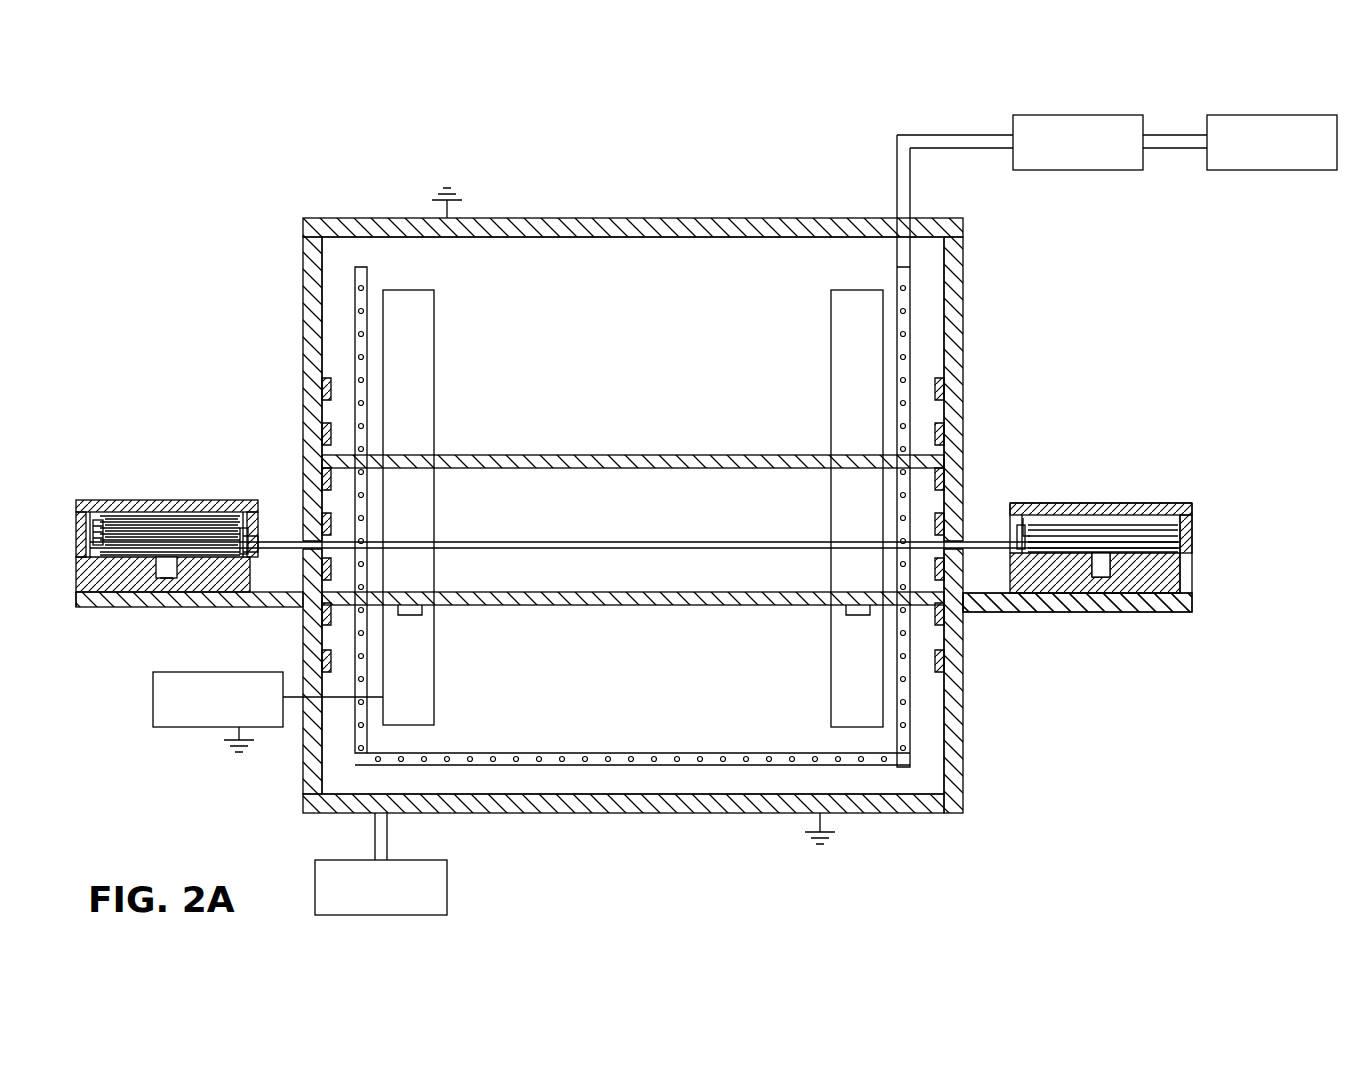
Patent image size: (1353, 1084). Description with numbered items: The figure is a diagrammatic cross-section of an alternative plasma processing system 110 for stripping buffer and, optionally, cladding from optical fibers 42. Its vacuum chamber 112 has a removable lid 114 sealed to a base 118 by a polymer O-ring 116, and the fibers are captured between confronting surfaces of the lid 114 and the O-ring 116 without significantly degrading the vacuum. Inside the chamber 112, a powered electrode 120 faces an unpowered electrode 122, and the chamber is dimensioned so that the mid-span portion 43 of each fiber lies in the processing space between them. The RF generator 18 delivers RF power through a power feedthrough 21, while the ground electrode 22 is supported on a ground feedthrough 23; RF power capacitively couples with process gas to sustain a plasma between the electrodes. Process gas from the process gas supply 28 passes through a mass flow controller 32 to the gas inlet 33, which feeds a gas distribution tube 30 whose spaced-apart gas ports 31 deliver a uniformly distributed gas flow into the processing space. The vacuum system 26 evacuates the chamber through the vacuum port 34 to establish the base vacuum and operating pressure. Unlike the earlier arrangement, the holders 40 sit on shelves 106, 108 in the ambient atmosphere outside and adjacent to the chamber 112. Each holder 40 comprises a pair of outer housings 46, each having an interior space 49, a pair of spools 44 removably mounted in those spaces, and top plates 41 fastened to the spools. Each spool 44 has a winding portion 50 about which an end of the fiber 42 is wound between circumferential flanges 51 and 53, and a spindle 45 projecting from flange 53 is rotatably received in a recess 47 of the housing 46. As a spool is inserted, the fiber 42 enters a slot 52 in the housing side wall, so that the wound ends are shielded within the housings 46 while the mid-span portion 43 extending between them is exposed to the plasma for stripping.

The plasma processing system 110 is at (342, 150).
The vacuum chamber 112 is at (557, 216).
The removable lid 114 is at (958, 326).
The O-ring 116 is at (985, 624).
The base 118 is at (950, 753).
The powered electrode 120 is at (720, 607).
The unpowered electrode 122 is at (675, 471).
The RF generator 18 is at (185, 727).
The power feedthrough 21 is at (410, 290).
The ground electrode 22 is at (1077, 537).
The ground feedthrough 23 is at (305, 425).
The vacuum system 26 is at (315, 885).
The process gas supply 28 is at (1295, 115).
The gas distribution tube 30 is at (676, 451).
The gas ports 31 is at (903, 698).
The mass flow controller 32 is at (1100, 115).
The gas inlet 33 is at (897, 228).
The vacuum port 34 is at (375, 803).
The holder 40 is at (644, 556).
The top plate 41 is at (208, 508).
The optical fiber 42 is at (210, 560).
The mid-span portion 43 is at (786, 544).
The spool 44 is at (135, 518).
The spindle 45 is at (142, 582).
The outer housing 46 is at (86, 600).
The recess 47 is at (166, 580).
The interior space 49 is at (85, 520).
The winding portion 50 is at (250, 515).
The circumferential flange 51 is at (170, 518).
The slot 52 is at (245, 556).
The circumferential flange 53 is at (99, 524).
The shelf 106 is at (93, 608).
The shelf 108 is at (1166, 612).